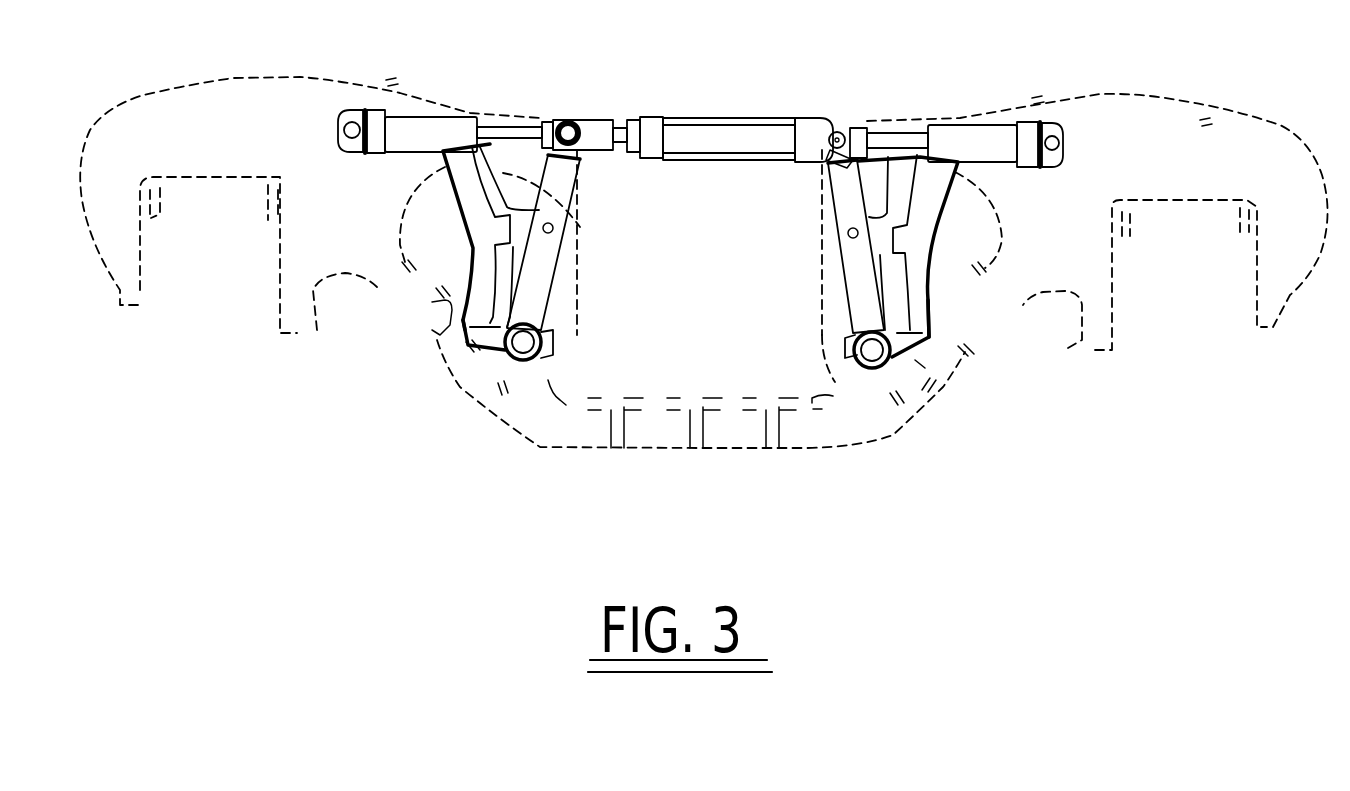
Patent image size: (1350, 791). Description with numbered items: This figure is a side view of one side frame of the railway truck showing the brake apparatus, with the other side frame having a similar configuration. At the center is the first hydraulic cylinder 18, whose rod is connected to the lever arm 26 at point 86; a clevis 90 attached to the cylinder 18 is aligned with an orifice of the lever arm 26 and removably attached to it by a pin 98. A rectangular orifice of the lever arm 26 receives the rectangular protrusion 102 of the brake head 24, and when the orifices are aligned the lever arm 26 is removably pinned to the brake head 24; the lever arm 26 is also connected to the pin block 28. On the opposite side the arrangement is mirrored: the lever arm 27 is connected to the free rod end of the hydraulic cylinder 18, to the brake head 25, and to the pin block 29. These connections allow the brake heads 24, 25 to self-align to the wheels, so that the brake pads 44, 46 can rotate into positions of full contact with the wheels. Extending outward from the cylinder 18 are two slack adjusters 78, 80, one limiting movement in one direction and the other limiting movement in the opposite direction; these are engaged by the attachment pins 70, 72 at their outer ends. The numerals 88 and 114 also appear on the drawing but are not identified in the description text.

The first hydraulic cylinder 18 is at (747, 140).
The brake head 24 is at (883, 187).
The brake head 25 is at (503, 282).
The lever arm 26 is at (853, 200).
The lever arm 27 is at (565, 193).
The pin block 28 is at (897, 343).
The pin block 29 is at (487, 347).
The brake pad 44 is at (460, 303).
The brake pad 46 is at (943, 303).
The attachment pin 70 is at (352, 122).
The attachment pin 72 is at (1054, 136).
The slack adjuster 78 is at (428, 130).
The slack adjuster 80 is at (970, 138).
The point 86 is at (835, 132).
The pin 88 is at (570, 122).
The clevis 90 is at (820, 118).
The pin 98 is at (855, 128).
The rectangular protrusion 102 is at (847, 232).
The connector block 114 is at (600, 122).